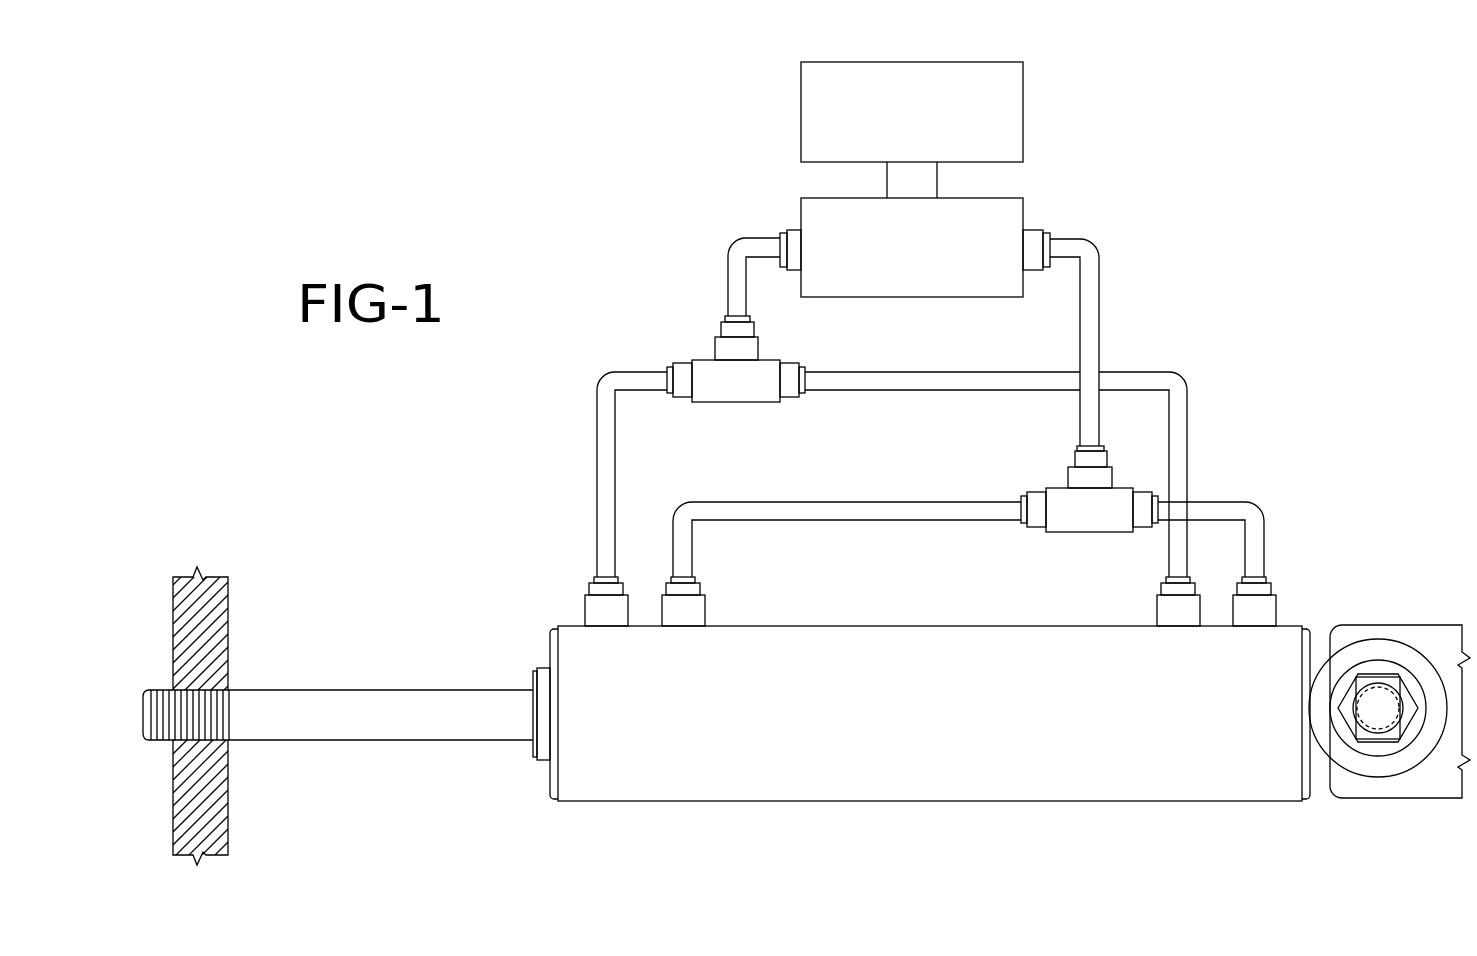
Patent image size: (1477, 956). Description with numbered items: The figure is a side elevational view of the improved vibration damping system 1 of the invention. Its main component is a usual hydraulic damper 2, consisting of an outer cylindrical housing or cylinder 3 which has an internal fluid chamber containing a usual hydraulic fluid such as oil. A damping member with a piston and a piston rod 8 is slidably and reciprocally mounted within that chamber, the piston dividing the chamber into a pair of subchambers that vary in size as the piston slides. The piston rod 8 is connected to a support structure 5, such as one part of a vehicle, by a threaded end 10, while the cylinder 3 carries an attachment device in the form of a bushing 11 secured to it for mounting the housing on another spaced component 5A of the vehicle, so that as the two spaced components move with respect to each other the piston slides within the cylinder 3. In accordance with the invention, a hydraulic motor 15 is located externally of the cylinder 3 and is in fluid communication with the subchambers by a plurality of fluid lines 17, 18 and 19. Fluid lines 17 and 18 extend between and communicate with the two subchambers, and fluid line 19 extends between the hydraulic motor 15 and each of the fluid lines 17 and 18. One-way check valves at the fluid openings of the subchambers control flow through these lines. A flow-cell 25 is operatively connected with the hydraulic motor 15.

The vibration damping system 1 is at (1240, 368).
The hydraulic damper 2 is at (921, 721).
The cylinder 3 is at (1040, 783).
The support structure 5 is at (222, 633).
The spaced component 5A is at (1408, 632).
The piston rod 8 is at (368, 727).
The threaded end 10 is at (153, 690).
The bushing 11 is at (1380, 770).
The hydraulic motor 15 is at (1028, 205).
The fluid line 17 is at (900, 515).
The fluid line 18 is at (890, 388).
The fluid line 19 is at (1084, 240).
The flow-cell 25 is at (1028, 103).